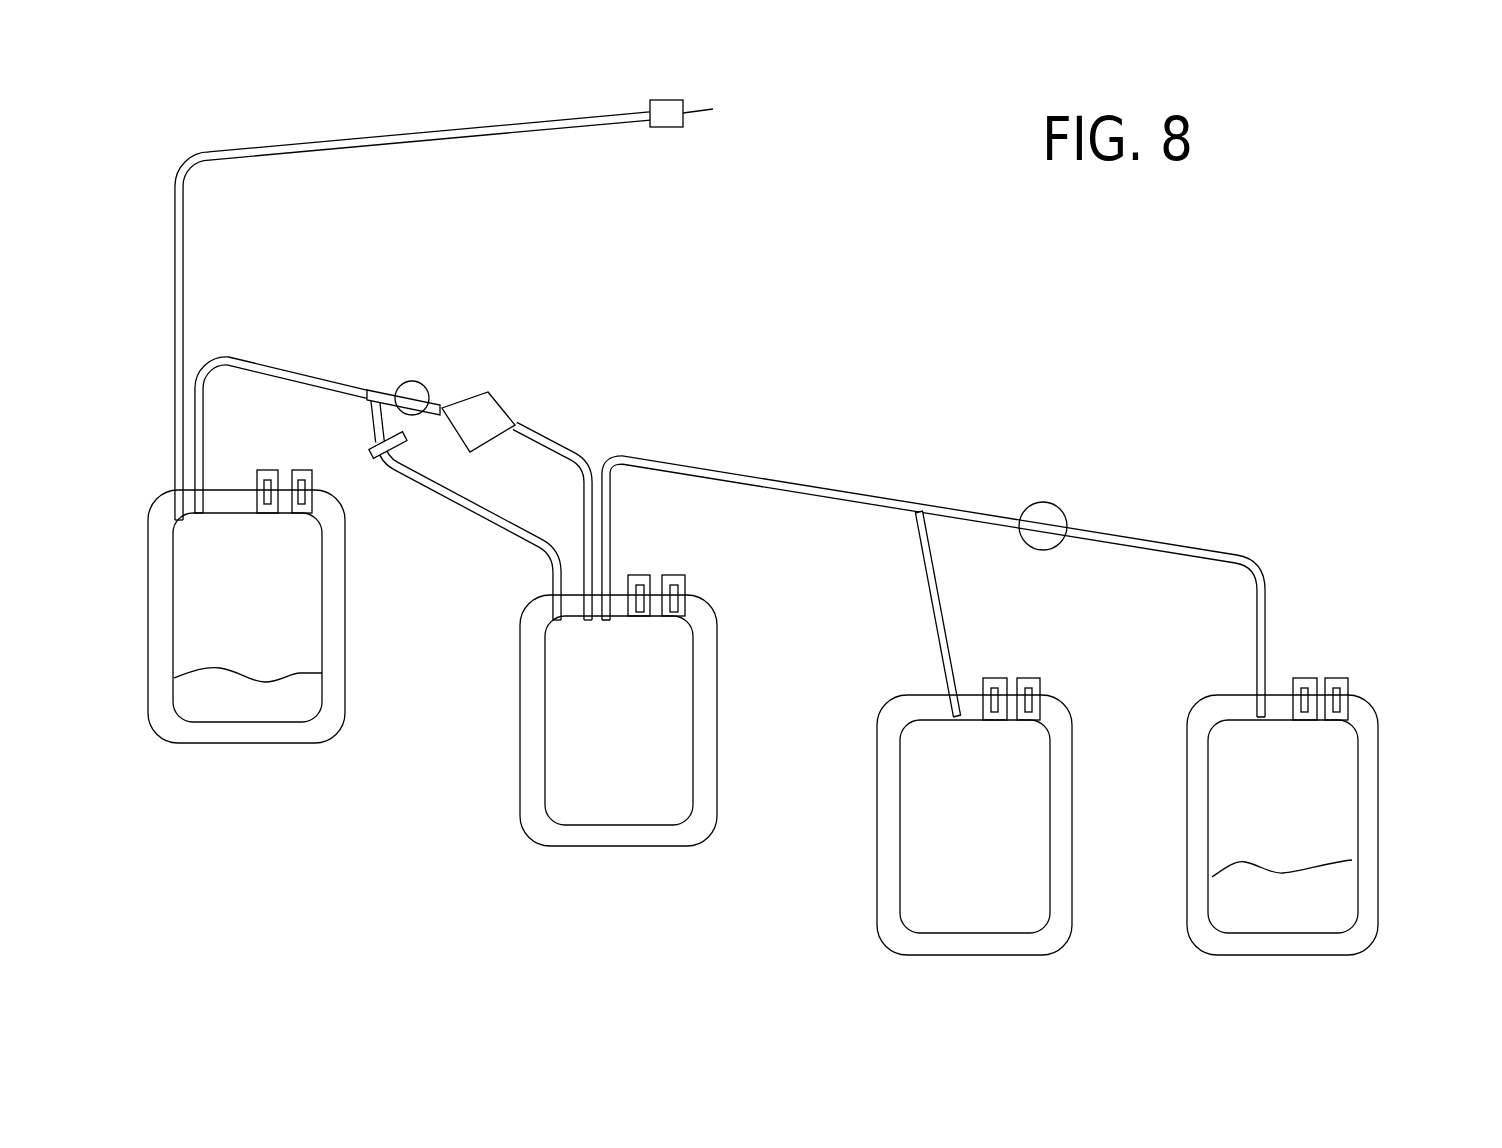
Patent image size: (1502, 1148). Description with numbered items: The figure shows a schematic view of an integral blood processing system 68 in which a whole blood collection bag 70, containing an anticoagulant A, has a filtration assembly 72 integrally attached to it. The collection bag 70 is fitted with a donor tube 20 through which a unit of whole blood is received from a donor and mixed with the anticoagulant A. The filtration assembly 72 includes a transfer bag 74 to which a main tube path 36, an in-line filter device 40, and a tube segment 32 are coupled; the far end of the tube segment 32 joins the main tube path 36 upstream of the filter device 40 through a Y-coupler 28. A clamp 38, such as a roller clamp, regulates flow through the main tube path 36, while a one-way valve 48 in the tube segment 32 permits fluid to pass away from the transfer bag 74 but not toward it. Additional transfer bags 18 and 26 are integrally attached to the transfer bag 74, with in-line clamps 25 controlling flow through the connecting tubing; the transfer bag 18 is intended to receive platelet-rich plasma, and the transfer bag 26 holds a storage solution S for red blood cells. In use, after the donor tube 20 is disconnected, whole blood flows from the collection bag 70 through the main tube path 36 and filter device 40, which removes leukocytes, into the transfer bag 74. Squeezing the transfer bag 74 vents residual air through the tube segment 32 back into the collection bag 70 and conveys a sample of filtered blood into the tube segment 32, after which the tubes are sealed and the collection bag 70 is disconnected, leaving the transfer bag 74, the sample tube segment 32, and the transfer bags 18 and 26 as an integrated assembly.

The integral blood processing system 68 is at (710, 253).
The donor tube 20 is at (180, 265).
The Y-coupler 28 is at (368, 388).
The filtration assembly 72 is at (515, 372).
The clamp 38 is at (414, 383).
The filter device 40 is at (496, 412).
The main tube path 36 is at (535, 428).
The one-way valve 48 is at (368, 445).
The tube segment 32 is at (455, 493).
The whole blood collection bag 70 is at (304, 633).
The anticoagulant A is at (275, 702).
The transfer bag 74 is at (676, 732).
The transfer bag 18 is at (997, 780).
The in-line clamp 25 is at (1067, 503).
The transfer bag 26 is at (1339, 784).
The storage solution S is at (1308, 910).